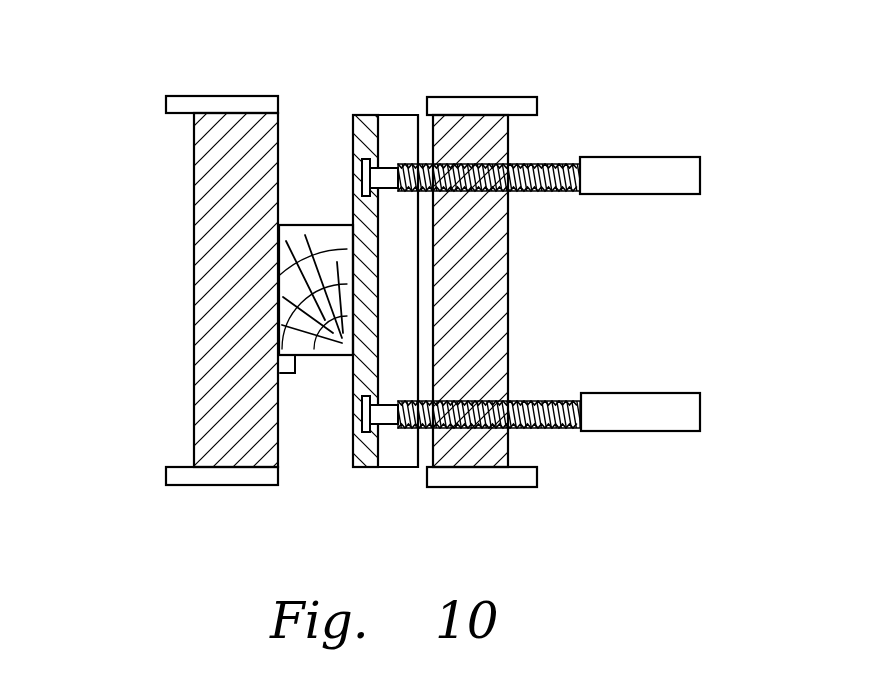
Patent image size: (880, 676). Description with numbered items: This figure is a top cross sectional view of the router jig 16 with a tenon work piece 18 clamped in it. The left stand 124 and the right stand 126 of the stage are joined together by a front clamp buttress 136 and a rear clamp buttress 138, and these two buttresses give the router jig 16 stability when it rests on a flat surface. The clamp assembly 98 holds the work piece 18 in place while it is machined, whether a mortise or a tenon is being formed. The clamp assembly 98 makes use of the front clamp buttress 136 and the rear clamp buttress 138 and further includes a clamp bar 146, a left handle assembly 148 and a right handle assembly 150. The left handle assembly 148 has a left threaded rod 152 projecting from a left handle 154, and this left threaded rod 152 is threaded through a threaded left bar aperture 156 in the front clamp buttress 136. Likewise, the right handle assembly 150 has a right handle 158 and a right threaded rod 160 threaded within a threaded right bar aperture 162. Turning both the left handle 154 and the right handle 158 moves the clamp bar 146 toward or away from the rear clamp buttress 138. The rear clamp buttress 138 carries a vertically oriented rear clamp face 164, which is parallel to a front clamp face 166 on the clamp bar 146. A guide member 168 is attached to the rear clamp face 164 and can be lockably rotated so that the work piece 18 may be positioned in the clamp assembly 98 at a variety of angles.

The router jig 16 is at (512, 64).
The work piece 18 is at (297, 245).
The clamp assembly 98 is at (384, 505).
The left stand 124 is at (233, 477).
The right stand 126 is at (242, 107).
The front clamp buttress 136 is at (492, 345).
The rear clamp buttress 138 is at (207, 232).
The clamp bar 146 is at (400, 130).
The left handle assembly 148 is at (644, 448).
The right handle assembly 150 is at (646, 216).
The left threaded rod 152 is at (486, 474).
The left handle 154 is at (625, 403).
The threaded left bar aperture 156 is at (472, 428).
The right handle 158 is at (650, 168).
The right threaded rod 160 is at (506, 173).
The threaded right bar aperture 162 is at (476, 190).
The rear clamp face 164 is at (284, 437).
The front clamp face 166 is at (356, 126).
The guide member 168 is at (297, 367).